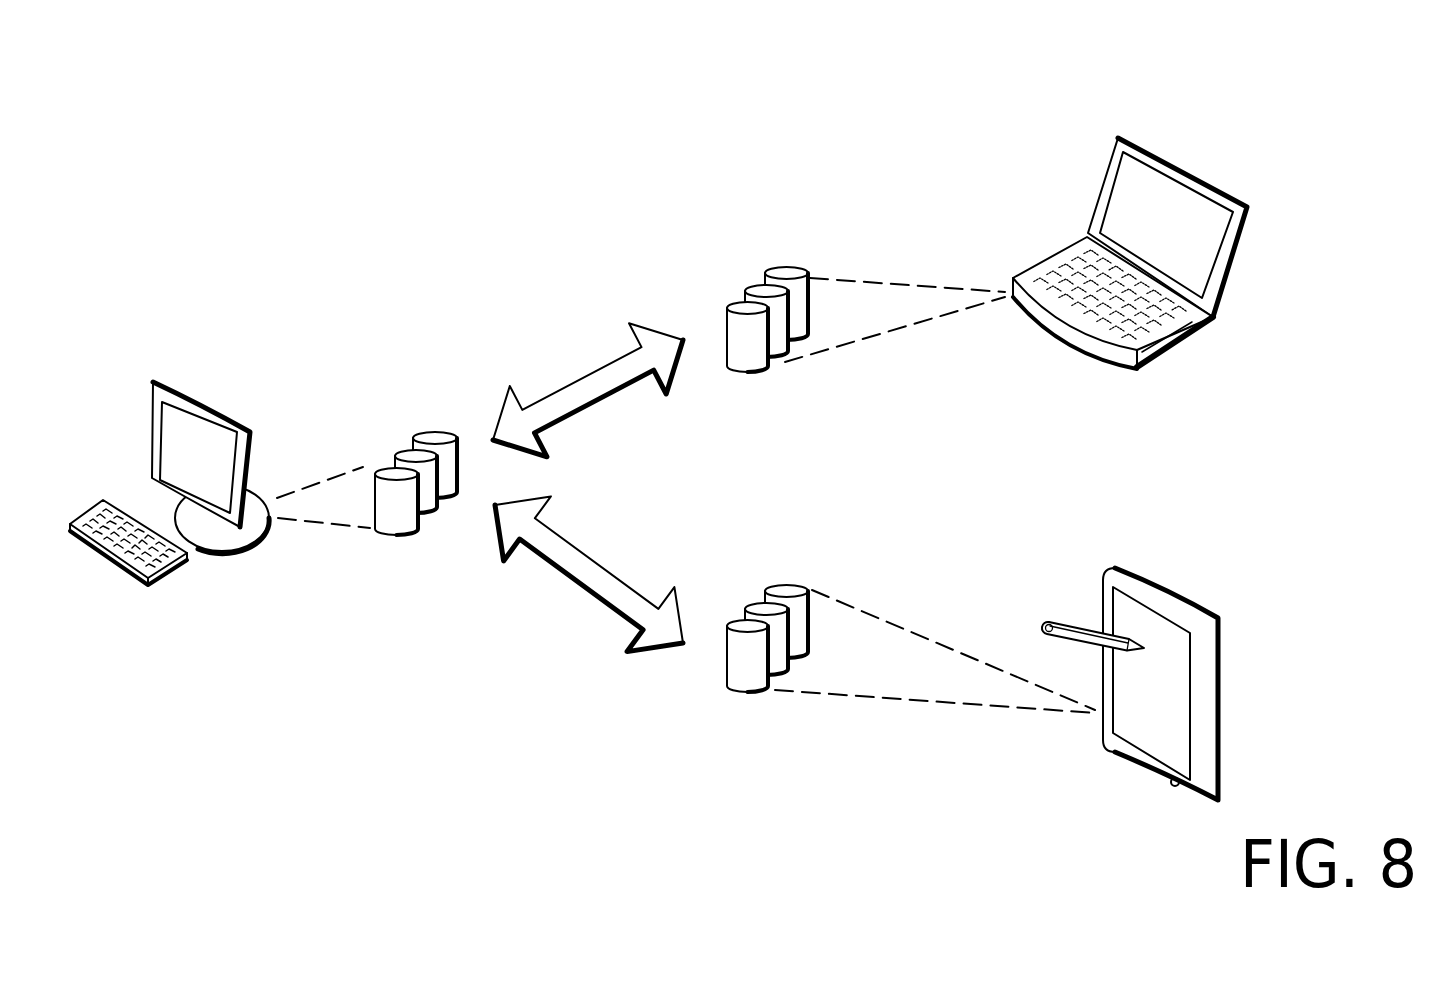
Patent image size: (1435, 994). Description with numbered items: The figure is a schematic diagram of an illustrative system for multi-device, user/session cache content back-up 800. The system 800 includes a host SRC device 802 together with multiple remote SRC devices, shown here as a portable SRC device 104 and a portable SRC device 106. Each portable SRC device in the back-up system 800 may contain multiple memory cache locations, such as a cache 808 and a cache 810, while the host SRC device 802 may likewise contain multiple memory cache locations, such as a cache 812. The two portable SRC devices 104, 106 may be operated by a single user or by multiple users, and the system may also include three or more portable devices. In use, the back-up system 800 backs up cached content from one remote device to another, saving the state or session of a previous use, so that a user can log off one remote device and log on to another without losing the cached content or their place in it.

The system for multi-device, user/session cache content back-up 800 is at (1317, 82).
The host SRC device 802 is at (217, 397).
The cache 812 is at (437, 427).
The cache 808 is at (787, 267).
The cache 810 is at (748, 692).
The portable SRC device 104 is at (1170, 158).
The portable SRC device 106 is at (1172, 582).